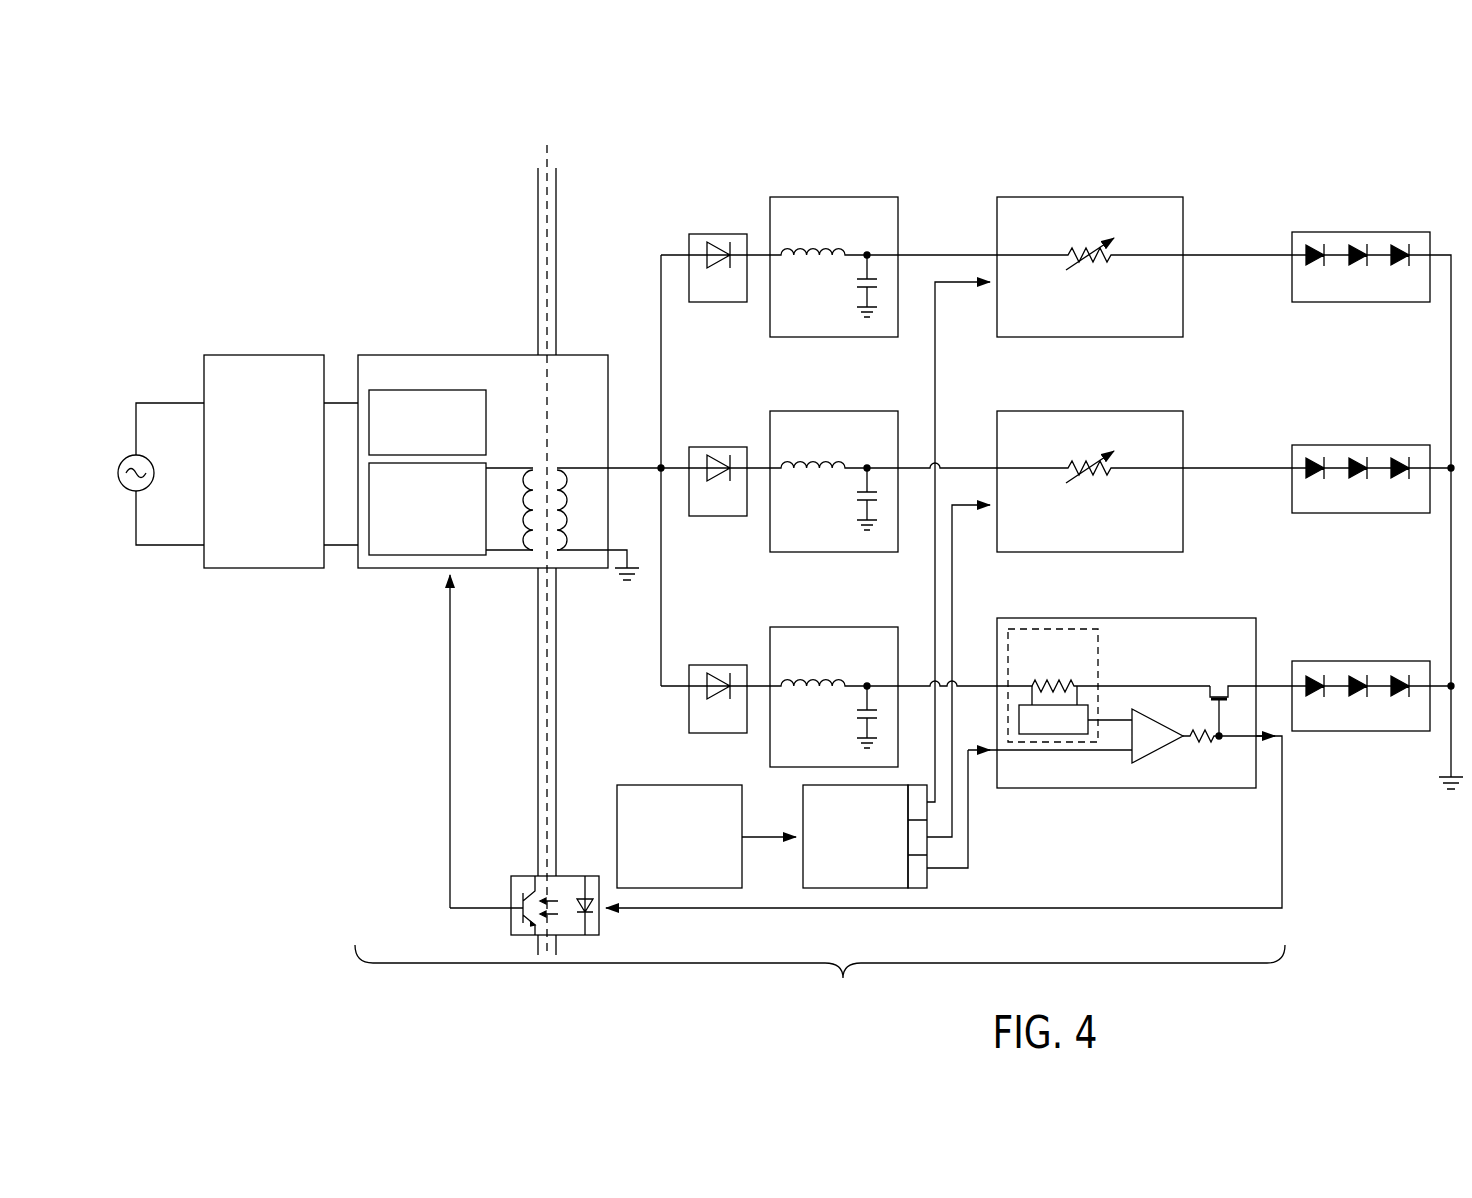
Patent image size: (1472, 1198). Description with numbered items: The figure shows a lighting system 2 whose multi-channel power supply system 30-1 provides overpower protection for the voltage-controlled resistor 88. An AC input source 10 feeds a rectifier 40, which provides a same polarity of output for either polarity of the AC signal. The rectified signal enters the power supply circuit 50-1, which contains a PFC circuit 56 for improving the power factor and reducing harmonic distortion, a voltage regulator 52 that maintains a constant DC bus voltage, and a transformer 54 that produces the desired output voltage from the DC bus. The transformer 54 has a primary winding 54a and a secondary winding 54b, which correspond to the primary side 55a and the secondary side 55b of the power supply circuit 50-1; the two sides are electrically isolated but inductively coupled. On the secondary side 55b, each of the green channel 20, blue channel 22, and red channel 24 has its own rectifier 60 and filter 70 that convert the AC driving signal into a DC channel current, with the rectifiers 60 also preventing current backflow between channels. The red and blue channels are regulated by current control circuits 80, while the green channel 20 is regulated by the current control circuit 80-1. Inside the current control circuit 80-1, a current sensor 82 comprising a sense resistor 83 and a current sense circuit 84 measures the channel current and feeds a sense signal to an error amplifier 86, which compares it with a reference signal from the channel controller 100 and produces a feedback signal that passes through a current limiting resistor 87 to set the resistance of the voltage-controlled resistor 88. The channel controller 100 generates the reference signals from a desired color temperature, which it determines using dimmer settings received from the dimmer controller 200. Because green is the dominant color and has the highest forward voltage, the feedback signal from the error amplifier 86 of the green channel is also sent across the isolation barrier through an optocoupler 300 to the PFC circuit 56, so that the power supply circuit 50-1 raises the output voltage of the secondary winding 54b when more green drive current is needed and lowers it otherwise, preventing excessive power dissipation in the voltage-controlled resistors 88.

The lighting system 2 is at (203, 220).
The input source 10 is at (132, 492).
The rectifier 40 is at (268, 355).
The power supply circuit 50-1 is at (472, 355).
The PFC circuit 56 is at (401, 390).
The voltage regulator 52 is at (428, 568).
The transformer 54 is at (587, 468).
The primary winding 54a is at (521, 467).
The secondary winding 54b is at (623, 497).
The primary side 55a is at (497, 241).
The secondary side 55b is at (576, 221).
The rectifier 60 is at (718, 234).
The filter 70 is at (837, 197).
The current control circuit 80 is at (1100, 197).
The current control circuit 80-1 is at (1123, 692).
The current sensor 82 is at (1092, 688).
The sense resistor 83 is at (1062, 688).
The current sense circuit 84 is at (1066, 735).
The error amplifier 86 is at (1150, 757).
The current limiting resistor 87 is at (1198, 733).
The voltage-controlled resistor 88 is at (1230, 684).
The red channel 24 is at (1363, 232).
The blue channel 22 is at (1358, 445).
The green channel 20 is at (1358, 661).
The dimmer controller 200 is at (662, 785).
The channel controller 100 is at (801, 872).
The optocoupler 300 is at (520, 876).
The multi-channel power supply system 30-1 is at (820, 986).